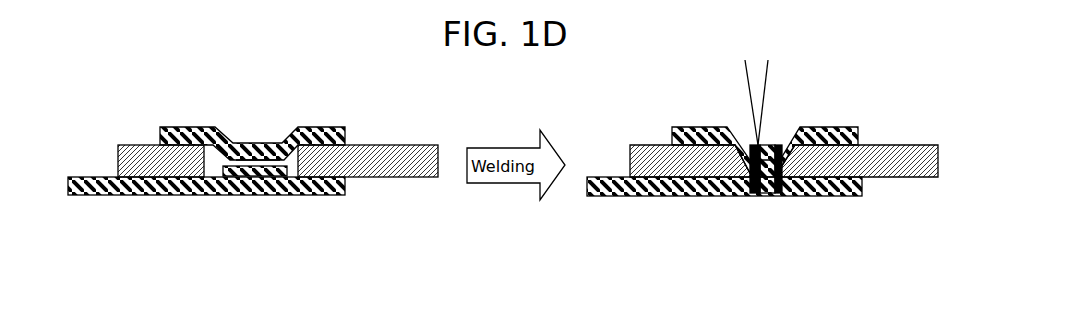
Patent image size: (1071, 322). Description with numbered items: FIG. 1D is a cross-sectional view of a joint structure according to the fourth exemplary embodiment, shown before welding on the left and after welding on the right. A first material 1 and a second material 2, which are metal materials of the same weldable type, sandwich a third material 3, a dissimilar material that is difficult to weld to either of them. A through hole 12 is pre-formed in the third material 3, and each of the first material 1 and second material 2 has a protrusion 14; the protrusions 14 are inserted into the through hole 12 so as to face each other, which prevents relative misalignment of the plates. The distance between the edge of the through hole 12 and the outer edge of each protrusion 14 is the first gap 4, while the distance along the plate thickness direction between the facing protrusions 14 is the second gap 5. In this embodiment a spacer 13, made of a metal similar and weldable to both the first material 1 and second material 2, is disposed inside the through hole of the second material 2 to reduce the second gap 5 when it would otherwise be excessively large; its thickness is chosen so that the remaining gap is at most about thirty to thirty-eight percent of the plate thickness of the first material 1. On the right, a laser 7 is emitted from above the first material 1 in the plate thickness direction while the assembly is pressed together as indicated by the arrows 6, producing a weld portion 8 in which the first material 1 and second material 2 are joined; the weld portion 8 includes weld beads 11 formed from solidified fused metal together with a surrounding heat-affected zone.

The first material 1 is at (345, 128).
The second material 2 is at (120, 197).
The third material 3 is at (118, 145).
The first gap 4 is at (215, 143).
The second gap 5 is at (289, 143).
The pressing force 6 is at (707, 121).
The laser 7 is at (765, 92).
The weld portion 8 is at (772, 145).
The weld bead 11 is at (777, 195).
The through hole 12 is at (204, 265).
The spacer 13 is at (250, 162).
The protrusion 14 is at (265, 176).